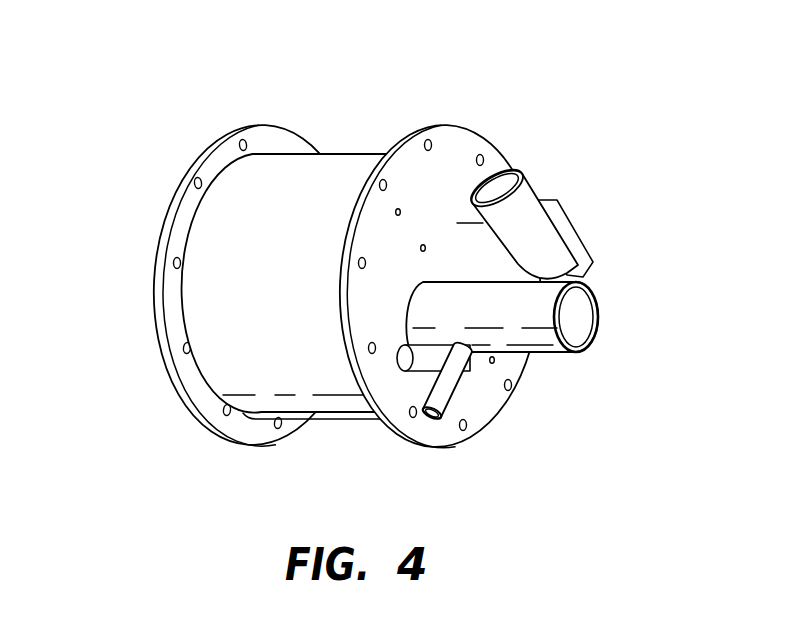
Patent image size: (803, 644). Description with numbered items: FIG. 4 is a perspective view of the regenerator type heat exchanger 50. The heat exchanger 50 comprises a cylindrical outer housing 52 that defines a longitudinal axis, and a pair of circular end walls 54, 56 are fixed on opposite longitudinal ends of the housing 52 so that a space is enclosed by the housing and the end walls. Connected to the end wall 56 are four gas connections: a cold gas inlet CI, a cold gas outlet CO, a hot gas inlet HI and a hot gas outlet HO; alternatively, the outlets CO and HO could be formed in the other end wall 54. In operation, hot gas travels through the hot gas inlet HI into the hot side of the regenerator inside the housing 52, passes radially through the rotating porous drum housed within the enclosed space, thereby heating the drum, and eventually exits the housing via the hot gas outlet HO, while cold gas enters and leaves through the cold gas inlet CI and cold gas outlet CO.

The regenerator type heat exchanger 50 is at (376, 236).
The cylindrical outer housing 52 is at (338, 153).
The circular end wall 54 is at (158, 230).
The circular end wall 56 is at (477, 133).
The cold gas inlet CI is at (573, 225).
The cold gas outlet CO is at (592, 265).
The hot gas inlet HI is at (597, 322).
The hot gas outlet HO is at (458, 395).